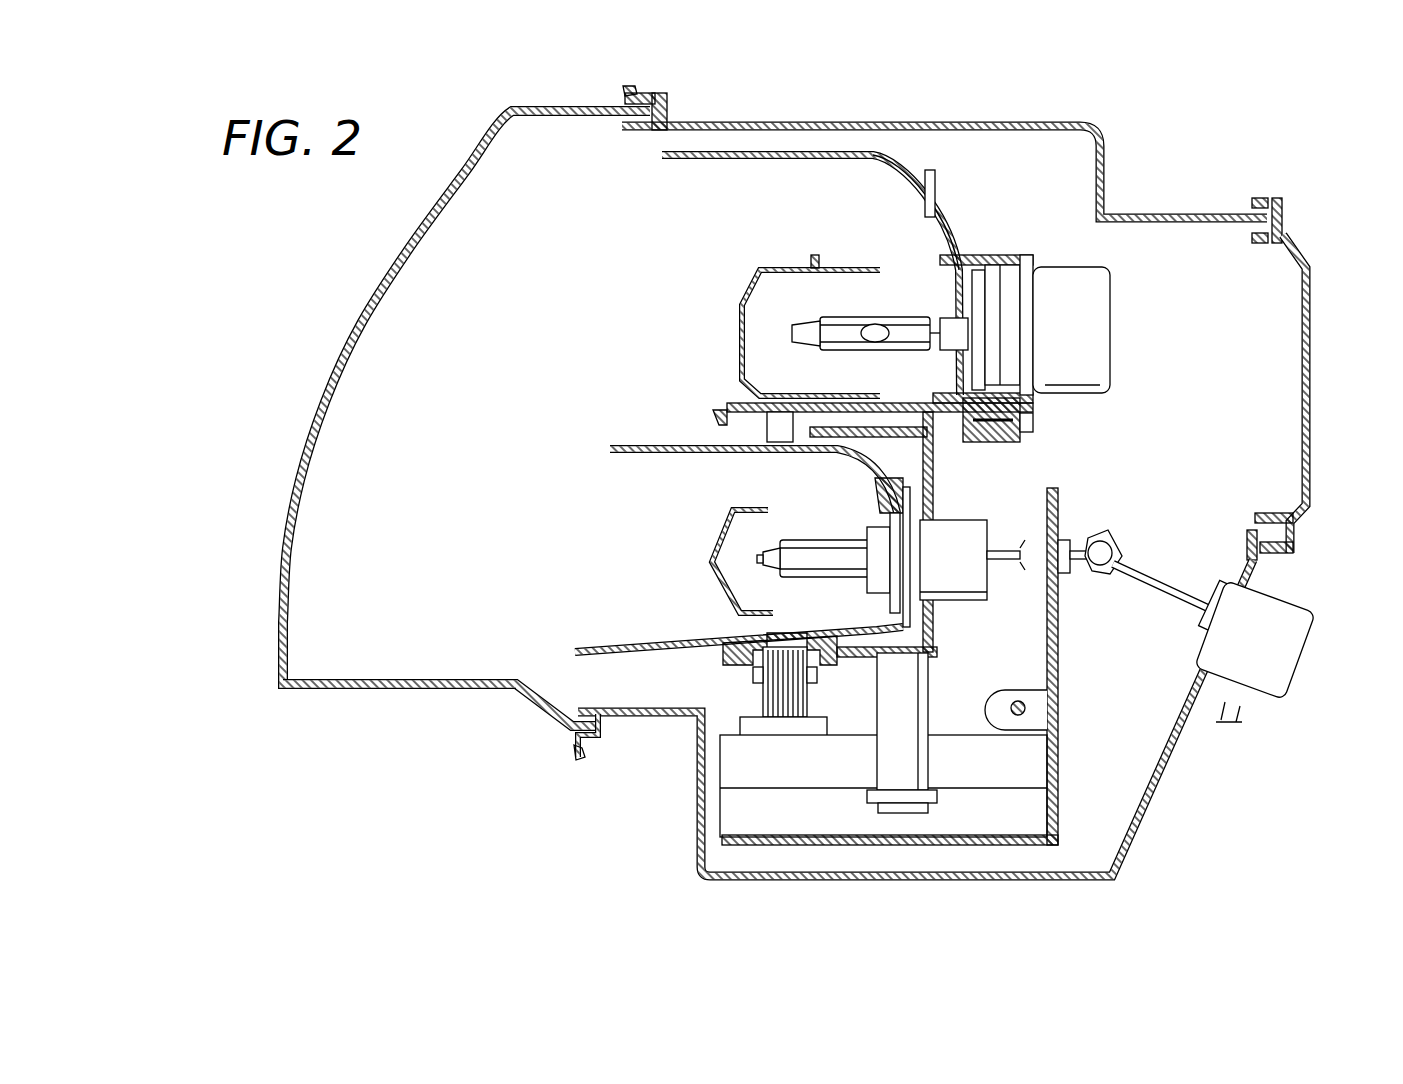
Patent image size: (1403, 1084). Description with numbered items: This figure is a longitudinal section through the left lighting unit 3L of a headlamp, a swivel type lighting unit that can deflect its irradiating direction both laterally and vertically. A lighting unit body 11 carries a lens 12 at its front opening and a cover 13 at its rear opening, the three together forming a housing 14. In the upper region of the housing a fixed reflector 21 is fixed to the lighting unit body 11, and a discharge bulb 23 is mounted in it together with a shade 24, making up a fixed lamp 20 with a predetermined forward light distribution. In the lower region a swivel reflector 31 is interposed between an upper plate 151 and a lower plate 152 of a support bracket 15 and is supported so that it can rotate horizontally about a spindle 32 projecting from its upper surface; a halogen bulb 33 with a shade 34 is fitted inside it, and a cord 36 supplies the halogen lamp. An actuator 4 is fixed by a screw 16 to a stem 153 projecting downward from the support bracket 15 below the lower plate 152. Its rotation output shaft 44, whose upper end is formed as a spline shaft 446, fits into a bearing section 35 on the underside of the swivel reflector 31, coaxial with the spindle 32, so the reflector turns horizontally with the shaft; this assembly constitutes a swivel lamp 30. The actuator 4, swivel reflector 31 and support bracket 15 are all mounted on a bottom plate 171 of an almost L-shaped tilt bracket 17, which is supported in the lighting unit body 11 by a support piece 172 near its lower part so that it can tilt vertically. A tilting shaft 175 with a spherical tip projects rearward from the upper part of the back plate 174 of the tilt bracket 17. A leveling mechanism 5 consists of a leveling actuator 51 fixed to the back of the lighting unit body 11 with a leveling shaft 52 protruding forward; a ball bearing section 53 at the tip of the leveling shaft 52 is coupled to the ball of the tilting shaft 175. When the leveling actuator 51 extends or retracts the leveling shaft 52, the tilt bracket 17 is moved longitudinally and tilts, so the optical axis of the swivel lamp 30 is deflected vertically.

The left lighting unit 3L is at (1092, 110).
The lighting unit body 11 is at (1107, 165).
The lens 12 is at (312, 425).
The cover 13 is at (1312, 372).
The housing 14 is at (368, 655).
The support bracket 15 is at (932, 170).
The screw 16 is at (905, 815).
The tilt bracket 17 is at (1067, 775).
The fixed lamp 20 is at (736, 149).
The fixed reflector 21 is at (893, 158).
The discharge bulb 23 is at (877, 330).
The shade 24 is at (748, 278).
The swivel lamp 30 is at (566, 672).
The swivel reflector 31 is at (660, 453).
The spindle 32 is at (745, 405).
The halogen bulb 33 is at (808, 545).
The shade 34 is at (716, 558).
The bearing section 35 is at (737, 662).
The cord 36 is at (1000, 563).
The rotation output shaft 44 is at (812, 700).
The spline shaft 446 is at (762, 692).
The actuator 4 is at (983, 795).
The leveling mechanism 5 is at (1294, 562).
The leveling actuator 51 is at (1280, 662).
The leveling shaft 52 is at (1150, 594).
The ball bearing section 53 is at (1196, 572).
The upper plate 151 is at (935, 455).
The lower plate 152 is at (880, 658).
The stem 153 is at (873, 755).
The bottom plate 171 is at (1045, 700).
The support piece 172 is at (1025, 712).
The back plate 174 is at (1060, 655).
The tilting shaft 175 is at (1073, 562).